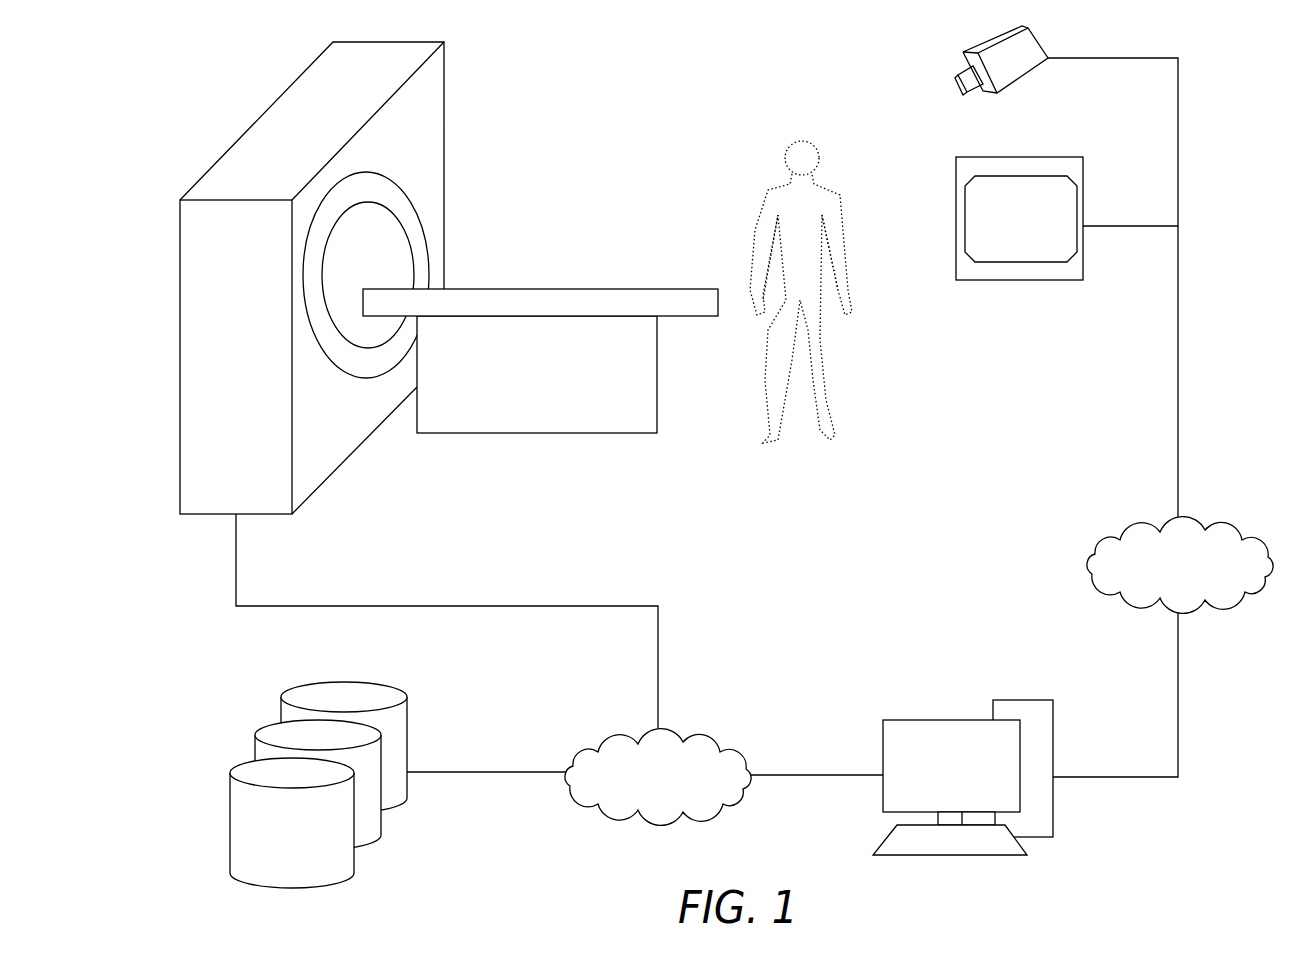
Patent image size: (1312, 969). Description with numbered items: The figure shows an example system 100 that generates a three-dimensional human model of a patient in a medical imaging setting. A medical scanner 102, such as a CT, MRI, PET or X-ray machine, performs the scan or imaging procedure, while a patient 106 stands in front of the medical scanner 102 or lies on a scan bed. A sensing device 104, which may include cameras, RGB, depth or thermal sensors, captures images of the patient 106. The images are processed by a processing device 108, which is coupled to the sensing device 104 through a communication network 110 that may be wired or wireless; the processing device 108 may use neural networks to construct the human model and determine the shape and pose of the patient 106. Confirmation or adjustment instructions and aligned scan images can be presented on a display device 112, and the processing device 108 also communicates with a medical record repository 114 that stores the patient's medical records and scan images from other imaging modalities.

The system 100 is at (668, 74).
The medical scanner 102 is at (433, 128).
The sensing device 104 is at (1007, 78).
The patient 106 is at (835, 235).
The processing device 108 is at (950, 728).
The communication network 110 is at (1112, 548).
The display device 112 is at (1061, 268).
The medical record repository 114 is at (257, 867).